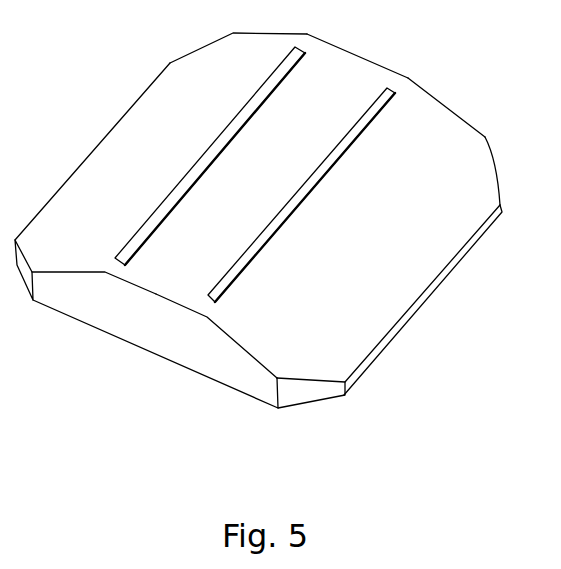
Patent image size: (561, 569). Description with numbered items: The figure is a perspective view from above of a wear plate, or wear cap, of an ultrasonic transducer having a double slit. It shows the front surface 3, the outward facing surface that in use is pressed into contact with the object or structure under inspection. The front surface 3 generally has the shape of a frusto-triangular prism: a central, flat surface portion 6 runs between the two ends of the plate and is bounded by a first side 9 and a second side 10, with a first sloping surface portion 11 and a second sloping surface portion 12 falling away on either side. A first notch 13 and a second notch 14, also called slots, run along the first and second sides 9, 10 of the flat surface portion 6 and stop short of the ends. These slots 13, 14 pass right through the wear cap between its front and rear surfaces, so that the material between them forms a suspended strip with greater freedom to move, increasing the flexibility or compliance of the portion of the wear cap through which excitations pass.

The front surface 3 is at (485, 179).
The central flat surface portion 6 is at (352, 57).
The first side 9 is at (107, 268).
The second side 10 is at (208, 313).
The first side sloping surface portion 11 is at (225, 47).
The second side sloping surface portion 12 is at (442, 115).
The first notch 13 is at (183, 177).
The second notch 14 is at (279, 214).